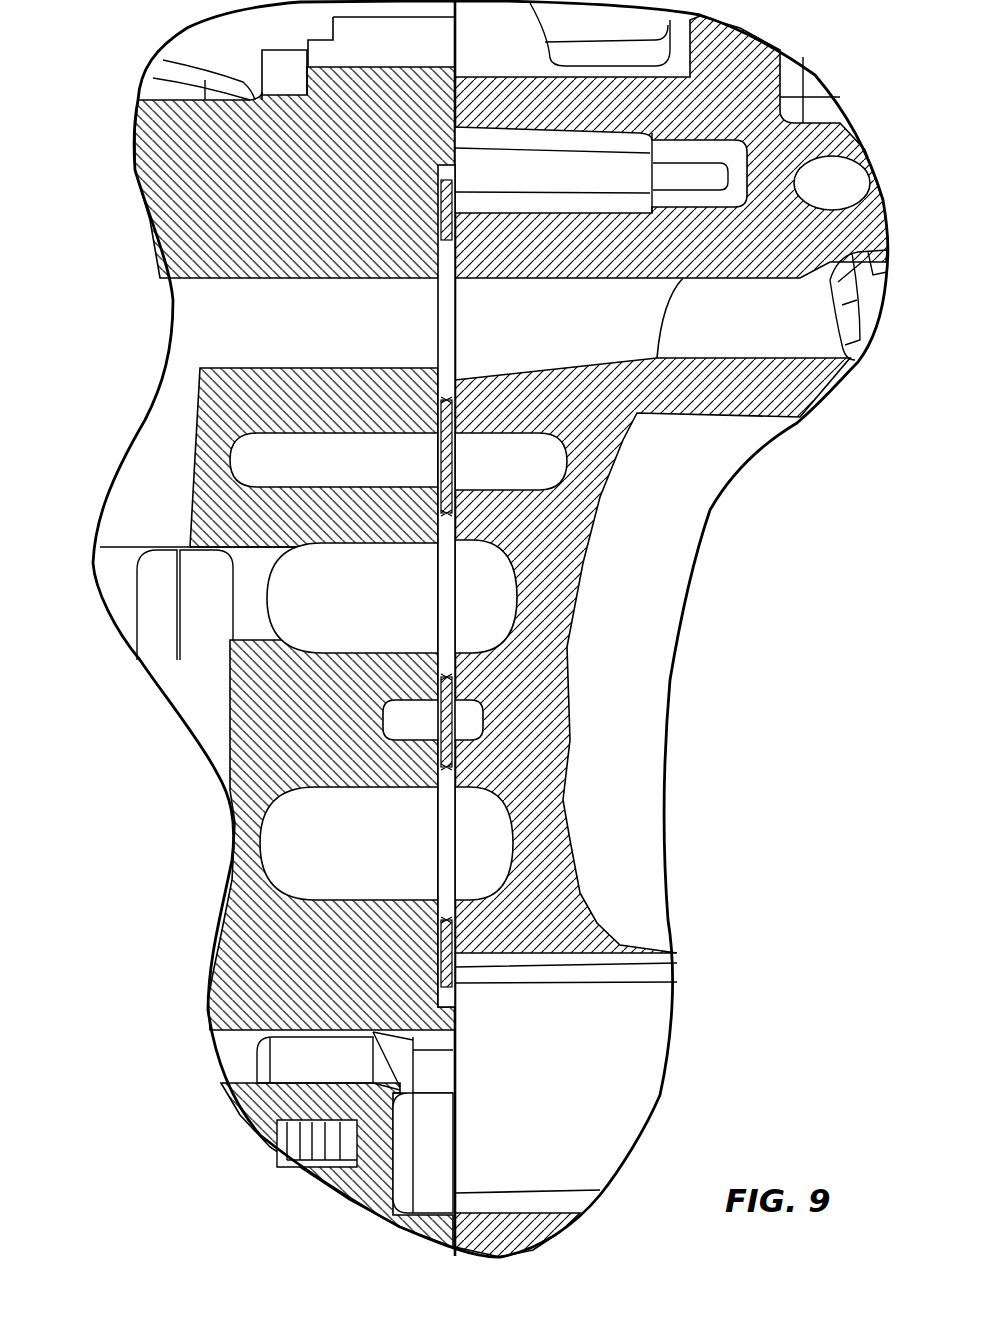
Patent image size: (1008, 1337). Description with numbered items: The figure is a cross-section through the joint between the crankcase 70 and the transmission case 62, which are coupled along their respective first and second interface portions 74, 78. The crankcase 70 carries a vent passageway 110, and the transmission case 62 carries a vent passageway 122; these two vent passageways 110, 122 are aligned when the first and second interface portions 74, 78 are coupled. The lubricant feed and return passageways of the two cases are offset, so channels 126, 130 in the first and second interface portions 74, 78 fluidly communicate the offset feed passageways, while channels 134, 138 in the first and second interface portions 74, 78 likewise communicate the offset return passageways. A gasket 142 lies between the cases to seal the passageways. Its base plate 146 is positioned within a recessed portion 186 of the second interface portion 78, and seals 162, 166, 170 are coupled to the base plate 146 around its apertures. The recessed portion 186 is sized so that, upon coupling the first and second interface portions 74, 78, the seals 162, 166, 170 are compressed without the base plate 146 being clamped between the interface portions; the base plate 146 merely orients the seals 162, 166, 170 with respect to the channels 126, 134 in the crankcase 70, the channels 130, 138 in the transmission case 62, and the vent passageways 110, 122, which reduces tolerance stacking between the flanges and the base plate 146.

The transmission case 62 is at (222, 118).
The crankcase 70 is at (490, 92).
The first interface portion 74 is at (450, 1230).
The second interface portion 78 is at (458, 55).
The vent passageway 110 is at (787, 323).
The vent passageway 122 is at (193, 327).
The channel 126 is at (505, 813).
The channel 130 is at (318, 783).
The channel 134 is at (500, 565).
The channel 138 is at (335, 540).
The gasket 142 is at (475, 999).
The base plate 146 is at (460, 973).
The seal 162 is at (440, 915).
The seal 166 is at (440, 670).
The seal 170 is at (440, 395).
The recessed portion 186 is at (460, 172).